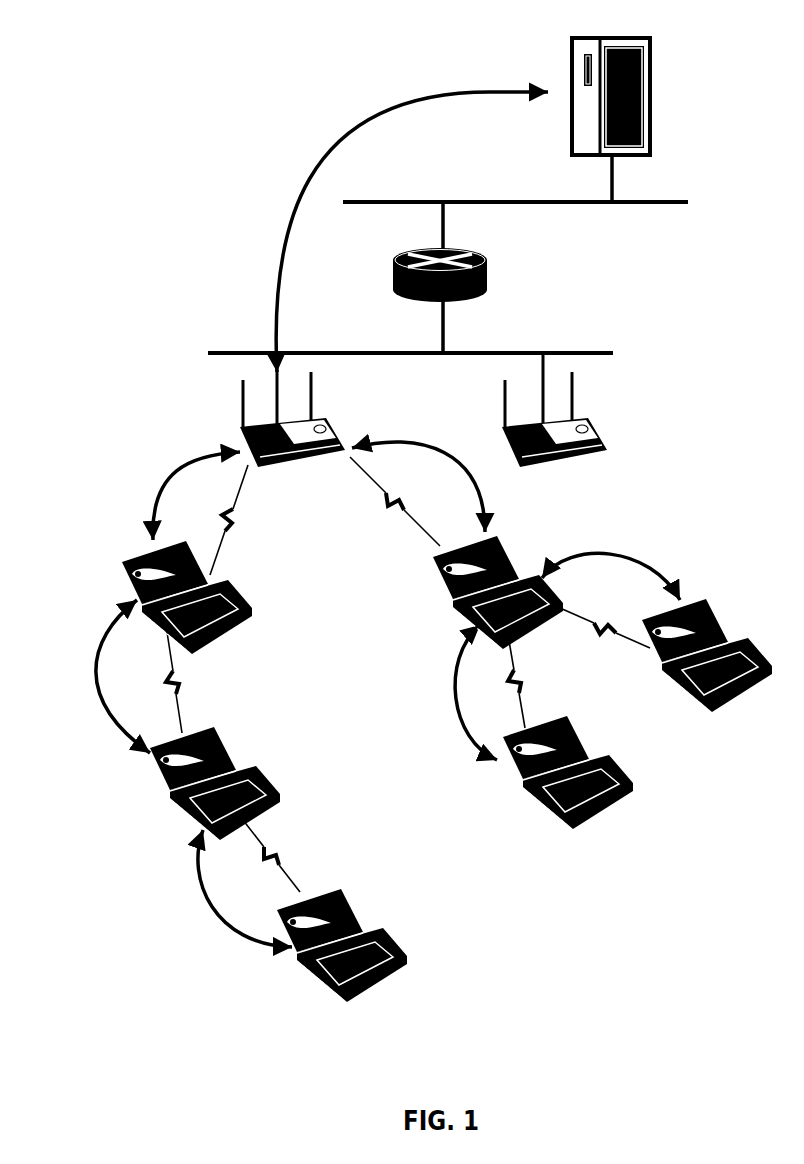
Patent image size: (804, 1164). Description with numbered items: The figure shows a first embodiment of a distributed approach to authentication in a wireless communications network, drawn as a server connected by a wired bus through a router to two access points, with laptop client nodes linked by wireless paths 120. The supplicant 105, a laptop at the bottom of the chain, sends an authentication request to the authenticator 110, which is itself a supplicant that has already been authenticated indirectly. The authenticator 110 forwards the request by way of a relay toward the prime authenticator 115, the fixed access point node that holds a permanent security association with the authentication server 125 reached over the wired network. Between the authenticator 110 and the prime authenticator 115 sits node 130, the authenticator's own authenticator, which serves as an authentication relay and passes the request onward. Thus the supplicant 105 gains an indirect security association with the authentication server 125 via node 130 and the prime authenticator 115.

The supplicant 105 is at (383, 937).
The authenticator 110 is at (162, 783).
The prime authenticator 115 is at (300, 470).
The wireless mesh network links 120 is at (167, 473).
The authentication server 125 is at (650, 103).
The node 130 is at (230, 620).